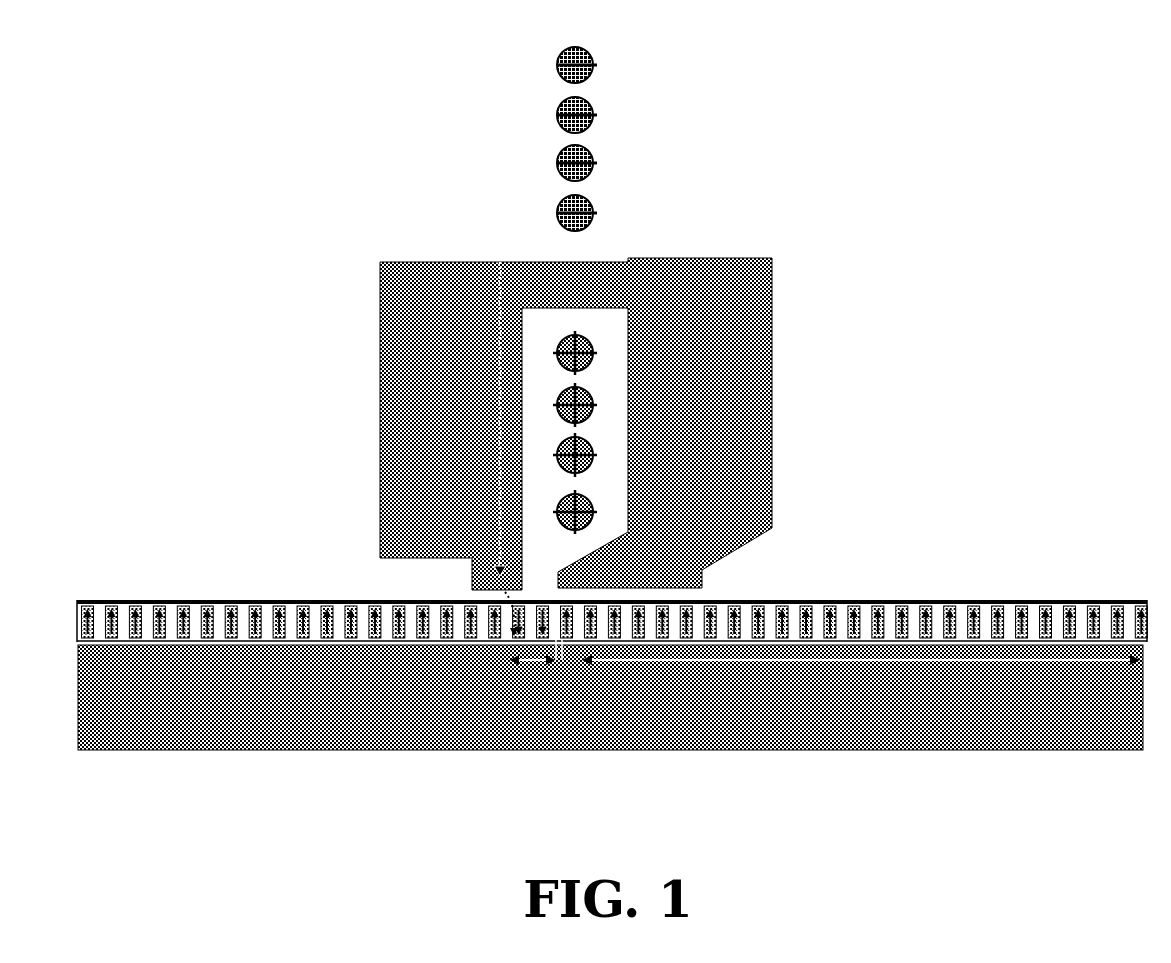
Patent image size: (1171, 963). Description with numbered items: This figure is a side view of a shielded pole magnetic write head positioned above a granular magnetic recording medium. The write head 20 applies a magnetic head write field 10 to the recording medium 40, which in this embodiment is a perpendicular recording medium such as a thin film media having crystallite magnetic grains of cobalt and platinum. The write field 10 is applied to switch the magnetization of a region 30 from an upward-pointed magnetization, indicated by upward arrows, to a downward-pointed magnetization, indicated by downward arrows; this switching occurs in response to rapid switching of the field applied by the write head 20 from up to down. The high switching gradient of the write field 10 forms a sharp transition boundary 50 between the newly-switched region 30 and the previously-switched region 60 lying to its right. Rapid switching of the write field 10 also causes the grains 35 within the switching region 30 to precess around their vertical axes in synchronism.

The write field 10 is at (490, 588).
The write head 20 is at (366, 392).
The region 30 is at (533, 662).
The grains 35 is at (556, 644).
The recording medium 40 is at (306, 580).
The transition boundary 50 is at (562, 648).
The previously-switched region 60 is at (753, 664).